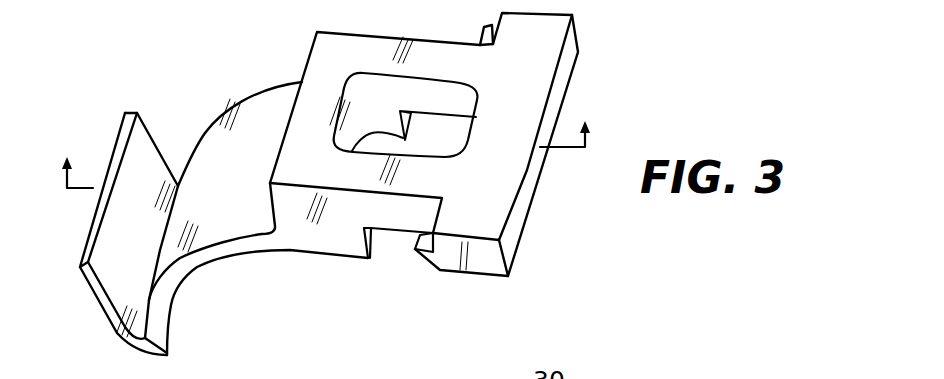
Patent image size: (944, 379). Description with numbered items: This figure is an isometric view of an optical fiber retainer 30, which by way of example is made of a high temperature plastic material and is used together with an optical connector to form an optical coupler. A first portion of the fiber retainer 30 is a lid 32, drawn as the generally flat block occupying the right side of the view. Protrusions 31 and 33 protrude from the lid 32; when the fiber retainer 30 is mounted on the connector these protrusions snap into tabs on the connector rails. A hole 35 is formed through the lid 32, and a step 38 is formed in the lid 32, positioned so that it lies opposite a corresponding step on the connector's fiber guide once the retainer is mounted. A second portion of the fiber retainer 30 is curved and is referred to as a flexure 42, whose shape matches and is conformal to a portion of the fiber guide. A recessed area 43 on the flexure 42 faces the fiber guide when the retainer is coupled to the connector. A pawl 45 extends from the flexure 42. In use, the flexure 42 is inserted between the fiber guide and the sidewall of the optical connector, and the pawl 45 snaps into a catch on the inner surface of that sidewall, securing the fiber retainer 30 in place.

The optical fiber retainer 30 is at (376, 182).
The protrusion 31 is at (417, 256).
The lid 32 is at (525, 181).
The protrusion 33 is at (482, 31).
The hole 35 is at (472, 103).
The step 38 is at (373, 243).
The flexure 42 is at (181, 331).
The recessed area 43 is at (383, 138).
The pawl 45 is at (132, 112).